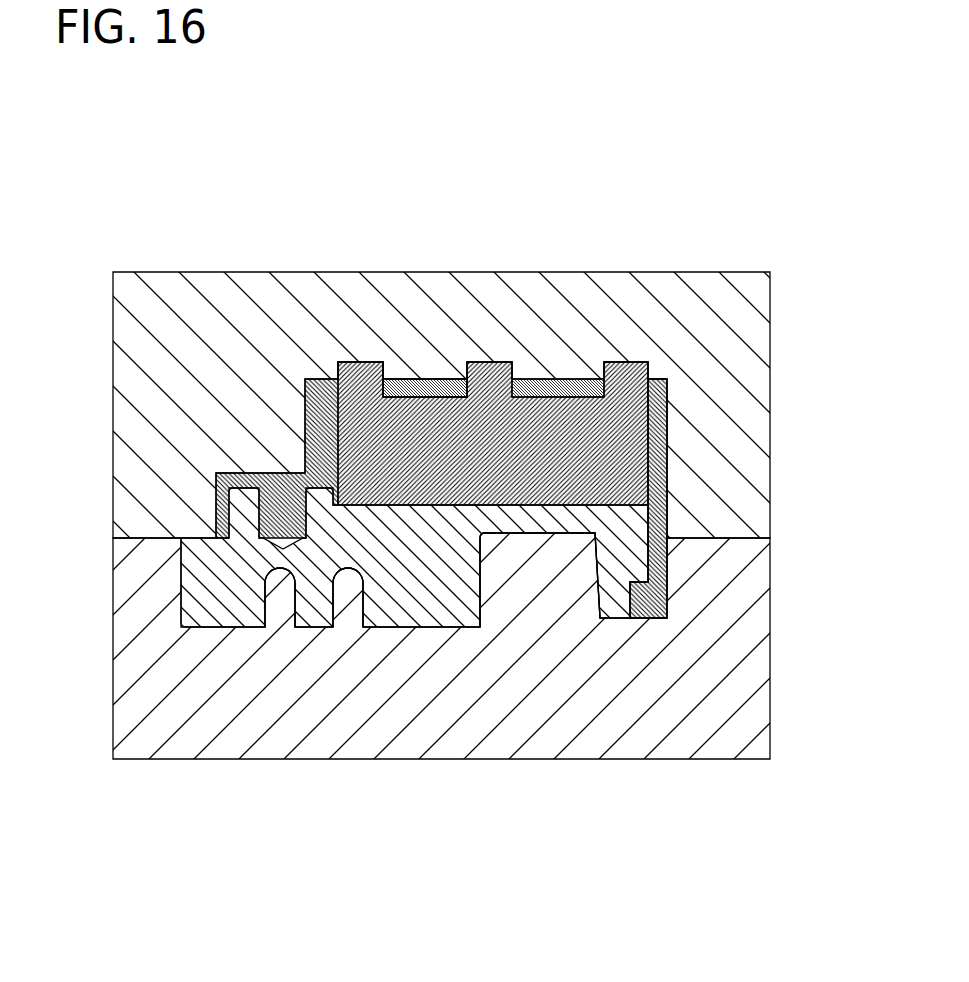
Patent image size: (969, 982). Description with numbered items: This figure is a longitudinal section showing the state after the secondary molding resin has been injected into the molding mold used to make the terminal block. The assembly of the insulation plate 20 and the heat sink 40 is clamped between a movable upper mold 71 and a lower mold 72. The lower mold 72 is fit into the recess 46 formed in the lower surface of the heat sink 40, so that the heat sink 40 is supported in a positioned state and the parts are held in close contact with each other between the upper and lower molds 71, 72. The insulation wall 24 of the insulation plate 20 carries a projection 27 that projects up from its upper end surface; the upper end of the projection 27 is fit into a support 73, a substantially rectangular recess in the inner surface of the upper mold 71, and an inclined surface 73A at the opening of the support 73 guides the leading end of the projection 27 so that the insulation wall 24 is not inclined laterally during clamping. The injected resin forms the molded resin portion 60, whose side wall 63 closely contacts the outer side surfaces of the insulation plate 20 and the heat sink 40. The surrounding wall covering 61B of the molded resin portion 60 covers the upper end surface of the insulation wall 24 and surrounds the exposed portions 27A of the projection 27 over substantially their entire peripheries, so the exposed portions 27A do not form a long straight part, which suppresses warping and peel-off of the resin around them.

The upper mold 71 is at (160, 288).
The lower mold 72 is at (655, 720).
The side wall 63 is at (307, 412).
The support 73 is at (356, 360).
The exposed portion 27A is at (374, 362).
The projection 27 is at (468, 388).
The surrounding wall covering 61B is at (558, 388).
The inclined surface 73A is at (652, 393).
The insulation wall 24 is at (645, 468).
The molded resin portion 60 is at (670, 525).
The recess 46 is at (282, 582).
The heat sink 40 is at (428, 629).
The insulation plate 20 is at (528, 536).